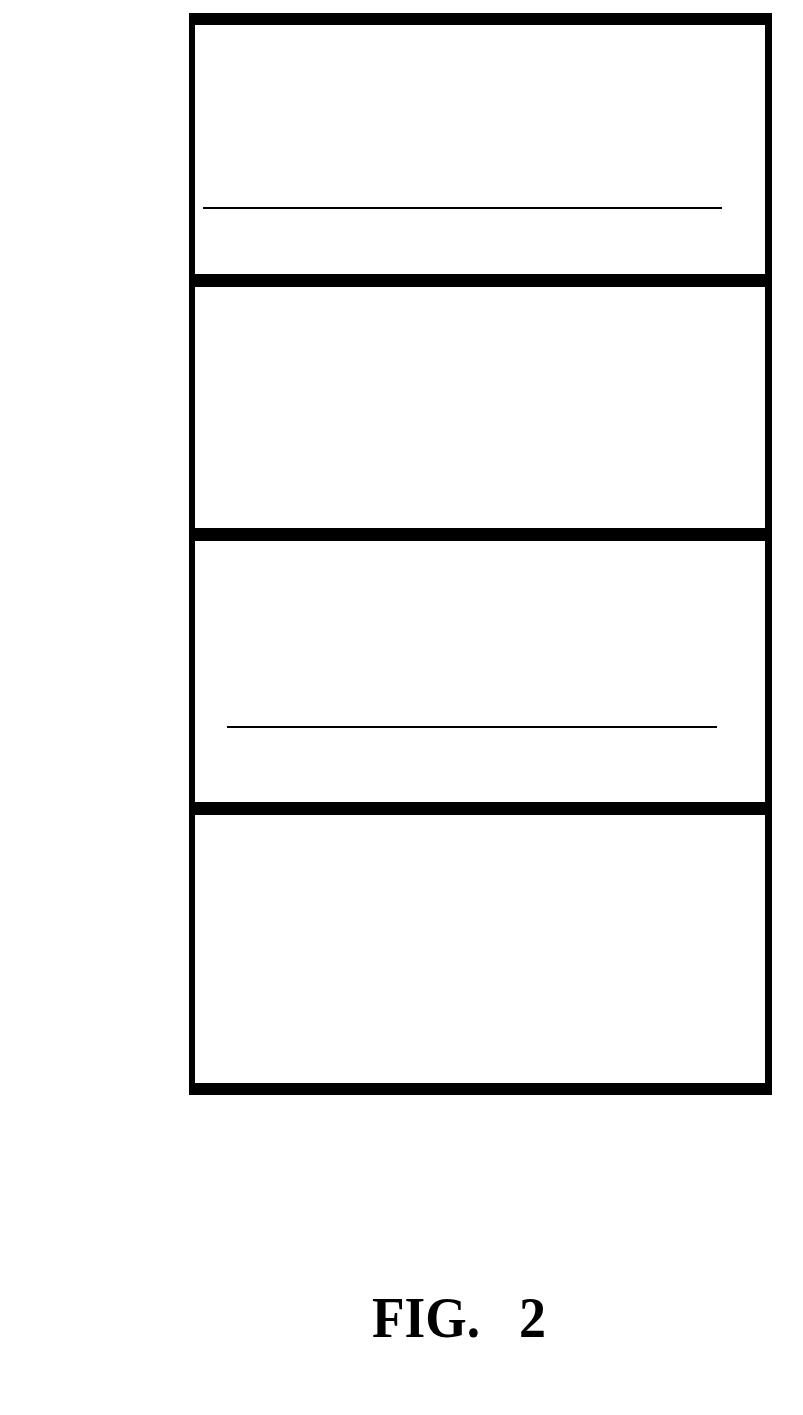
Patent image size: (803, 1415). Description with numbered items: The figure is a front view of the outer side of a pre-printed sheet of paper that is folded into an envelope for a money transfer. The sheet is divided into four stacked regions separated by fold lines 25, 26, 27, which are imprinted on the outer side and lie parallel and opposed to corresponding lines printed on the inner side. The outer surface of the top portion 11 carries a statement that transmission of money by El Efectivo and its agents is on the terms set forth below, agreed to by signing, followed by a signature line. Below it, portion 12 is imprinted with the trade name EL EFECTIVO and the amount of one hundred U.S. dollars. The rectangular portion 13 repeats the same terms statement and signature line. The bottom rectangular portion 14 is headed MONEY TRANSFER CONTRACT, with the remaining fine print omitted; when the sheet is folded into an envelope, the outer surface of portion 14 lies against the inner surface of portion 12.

The portion 11 is at (191, 131).
The portion 12 is at (191, 418).
The rectangular portion 13 is at (191, 661).
The rectangular portion 14 is at (191, 969).
The fold line 25 is at (224, 274).
The fold line 26 is at (228, 528).
The fold line 27 is at (224, 802).